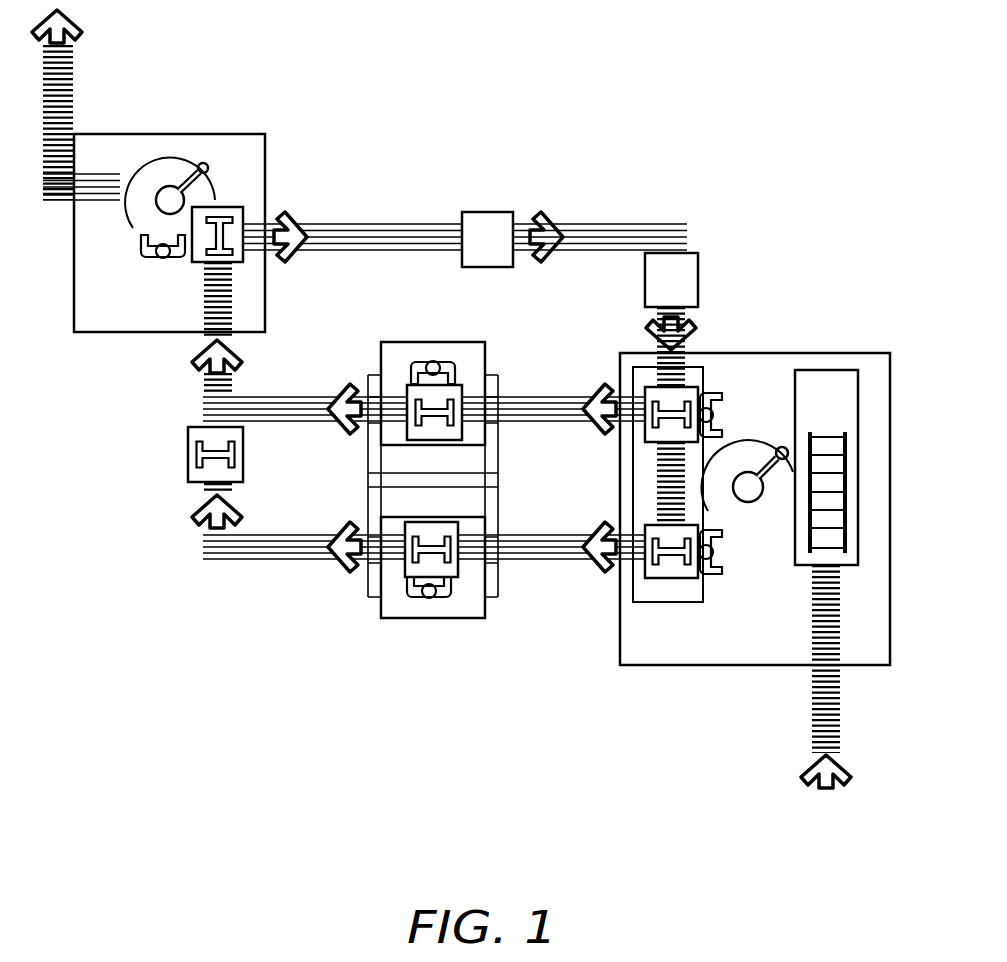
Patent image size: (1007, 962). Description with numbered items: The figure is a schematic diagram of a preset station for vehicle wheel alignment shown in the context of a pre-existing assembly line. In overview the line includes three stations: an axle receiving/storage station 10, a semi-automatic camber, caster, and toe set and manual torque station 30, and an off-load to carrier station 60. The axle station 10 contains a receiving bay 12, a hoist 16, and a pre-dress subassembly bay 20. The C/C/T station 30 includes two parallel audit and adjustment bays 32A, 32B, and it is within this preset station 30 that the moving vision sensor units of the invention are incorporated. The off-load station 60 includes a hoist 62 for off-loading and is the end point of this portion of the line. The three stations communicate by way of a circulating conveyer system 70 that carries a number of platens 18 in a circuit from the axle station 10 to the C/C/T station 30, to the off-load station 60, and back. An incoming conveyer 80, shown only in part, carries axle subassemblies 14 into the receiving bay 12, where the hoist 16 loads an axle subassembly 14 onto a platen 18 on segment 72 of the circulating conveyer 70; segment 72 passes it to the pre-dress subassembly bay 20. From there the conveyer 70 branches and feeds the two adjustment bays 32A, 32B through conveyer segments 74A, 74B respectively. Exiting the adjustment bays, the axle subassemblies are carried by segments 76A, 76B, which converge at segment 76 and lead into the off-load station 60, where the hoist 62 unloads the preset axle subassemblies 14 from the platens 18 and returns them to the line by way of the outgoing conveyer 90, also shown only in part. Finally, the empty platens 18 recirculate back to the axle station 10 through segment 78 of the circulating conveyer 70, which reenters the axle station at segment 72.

The axle receiving/storage station 10 is at (806, 308).
The receiving bay 12 is at (842, 370).
The axle subassembly 14 is at (413, 410).
The hoist 16 is at (793, 470).
The platen 18 is at (240, 210).
The pre-dress subassembly bay 20 is at (705, 390).
The preset camber/caster/toe station 30 is at (358, 608).
The audit and adjustment bay 32A is at (473, 380).
The audit and adjustment bay 32B is at (473, 603).
The off-load to carrier station 60 is at (216, 118).
The hoist 62 is at (185, 185).
The circulating conveyer system 70 is at (373, 197).
The conveyer segment 72 is at (657, 355).
The conveyer segment 74A is at (548, 400).
The conveyer segment 74B is at (538, 563).
The conveyer segment 76 is at (240, 355).
The conveyer segment 76A is at (285, 397).
The conveyer segment 76B is at (262, 545).
The conveyer segment 78 is at (612, 225).
The incoming conveyer 80 is at (820, 705).
The outgoing conveyer 90 is at (72, 187).